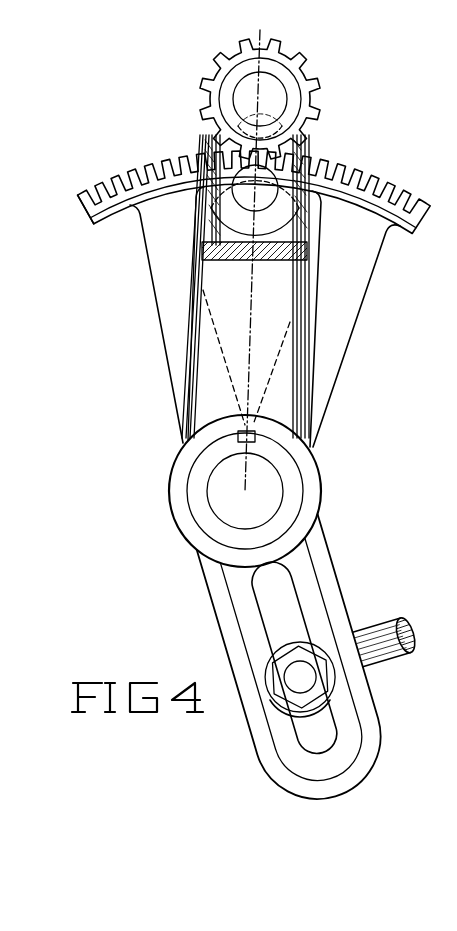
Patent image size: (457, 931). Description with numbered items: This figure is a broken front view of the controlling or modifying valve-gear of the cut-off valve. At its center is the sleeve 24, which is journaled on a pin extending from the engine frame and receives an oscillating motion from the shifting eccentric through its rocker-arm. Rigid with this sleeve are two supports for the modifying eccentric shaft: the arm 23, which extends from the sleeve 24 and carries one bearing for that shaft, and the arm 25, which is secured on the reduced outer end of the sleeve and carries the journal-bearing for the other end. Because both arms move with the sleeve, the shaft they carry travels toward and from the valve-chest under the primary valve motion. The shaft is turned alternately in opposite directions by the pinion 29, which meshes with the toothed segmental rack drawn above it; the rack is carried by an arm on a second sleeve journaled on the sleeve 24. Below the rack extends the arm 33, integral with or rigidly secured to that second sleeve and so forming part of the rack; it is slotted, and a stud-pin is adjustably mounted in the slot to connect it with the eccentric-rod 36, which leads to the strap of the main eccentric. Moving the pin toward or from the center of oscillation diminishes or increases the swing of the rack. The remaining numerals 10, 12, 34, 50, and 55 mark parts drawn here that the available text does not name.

The toothed sector rack 10 is at (248, 193).
The pivot axle 12 is at (220, 492).
The arm 23 is at (306, 152).
The sleeve 24 is at (290, 477).
The arm 25 is at (299, 306).
The pinion 29 is at (206, 81).
The arm 33 is at (233, 610).
The slot 34 is at (278, 587).
The eccentric-rod 36 is at (358, 630).
The rack end stop 50 is at (97, 207).
The clamping bolt 55 is at (296, 677).